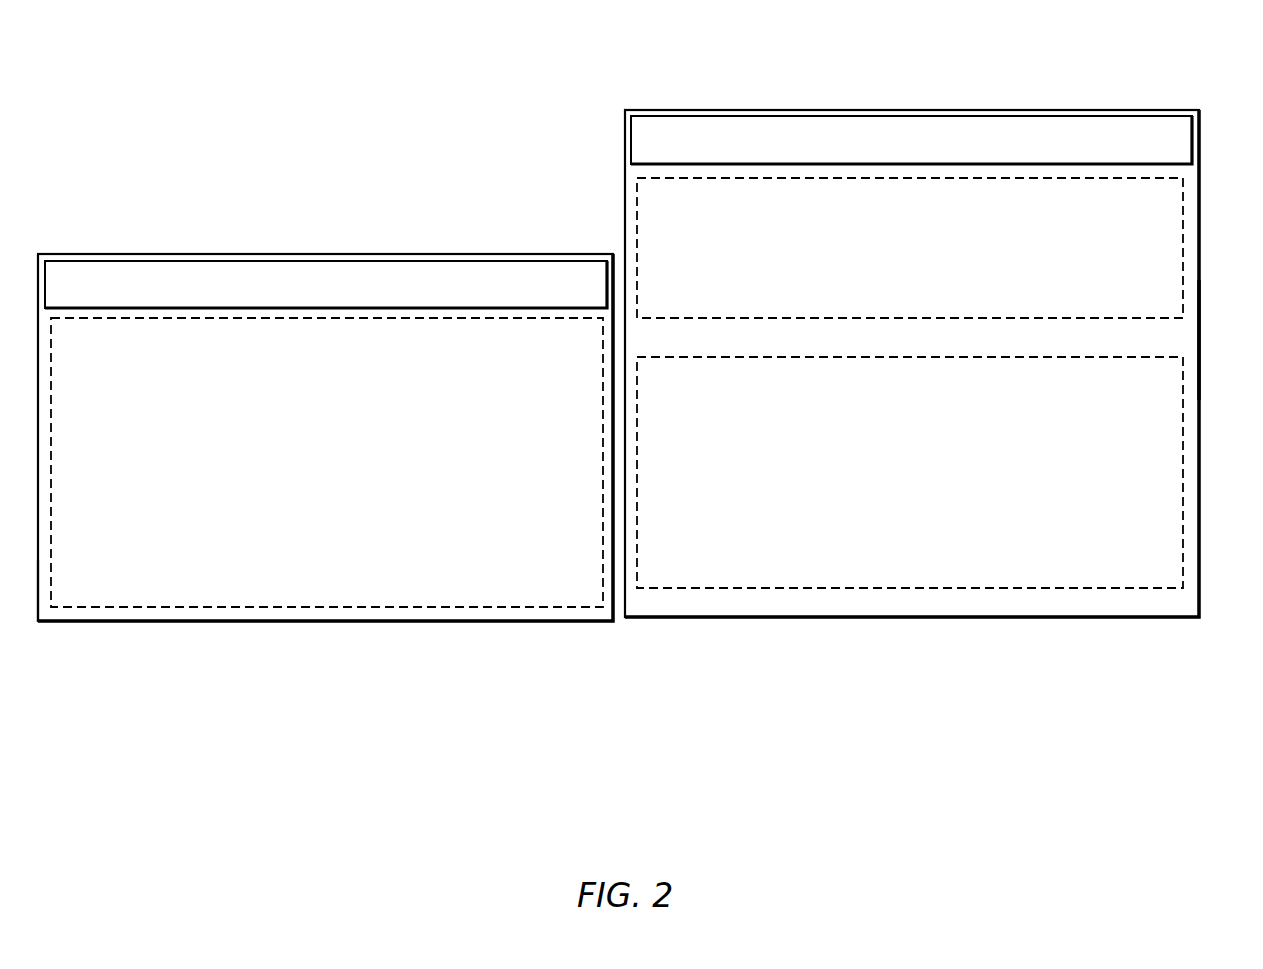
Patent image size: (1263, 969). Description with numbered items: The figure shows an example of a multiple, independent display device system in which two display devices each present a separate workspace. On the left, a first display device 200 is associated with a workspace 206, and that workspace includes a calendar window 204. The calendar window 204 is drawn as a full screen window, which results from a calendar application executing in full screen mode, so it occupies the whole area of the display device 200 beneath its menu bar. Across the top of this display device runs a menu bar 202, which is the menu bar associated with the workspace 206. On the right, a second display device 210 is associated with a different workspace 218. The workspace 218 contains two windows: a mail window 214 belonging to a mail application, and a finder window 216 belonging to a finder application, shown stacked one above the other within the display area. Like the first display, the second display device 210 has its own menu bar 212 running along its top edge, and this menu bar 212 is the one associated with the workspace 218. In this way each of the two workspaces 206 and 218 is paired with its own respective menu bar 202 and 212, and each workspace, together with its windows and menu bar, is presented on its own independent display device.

The display device 200 is at (309, 427).
The menu bar 202 is at (204, 295).
The calendar window 204 is at (149, 461).
The workspace 206 is at (43, 600).
The display device 210 is at (936, 329).
The menu bar 212 is at (791, 151).
The mail window 214 is at (696, 241).
The finder window 216 is at (697, 424).
The workspace 218 is at (1195, 342).